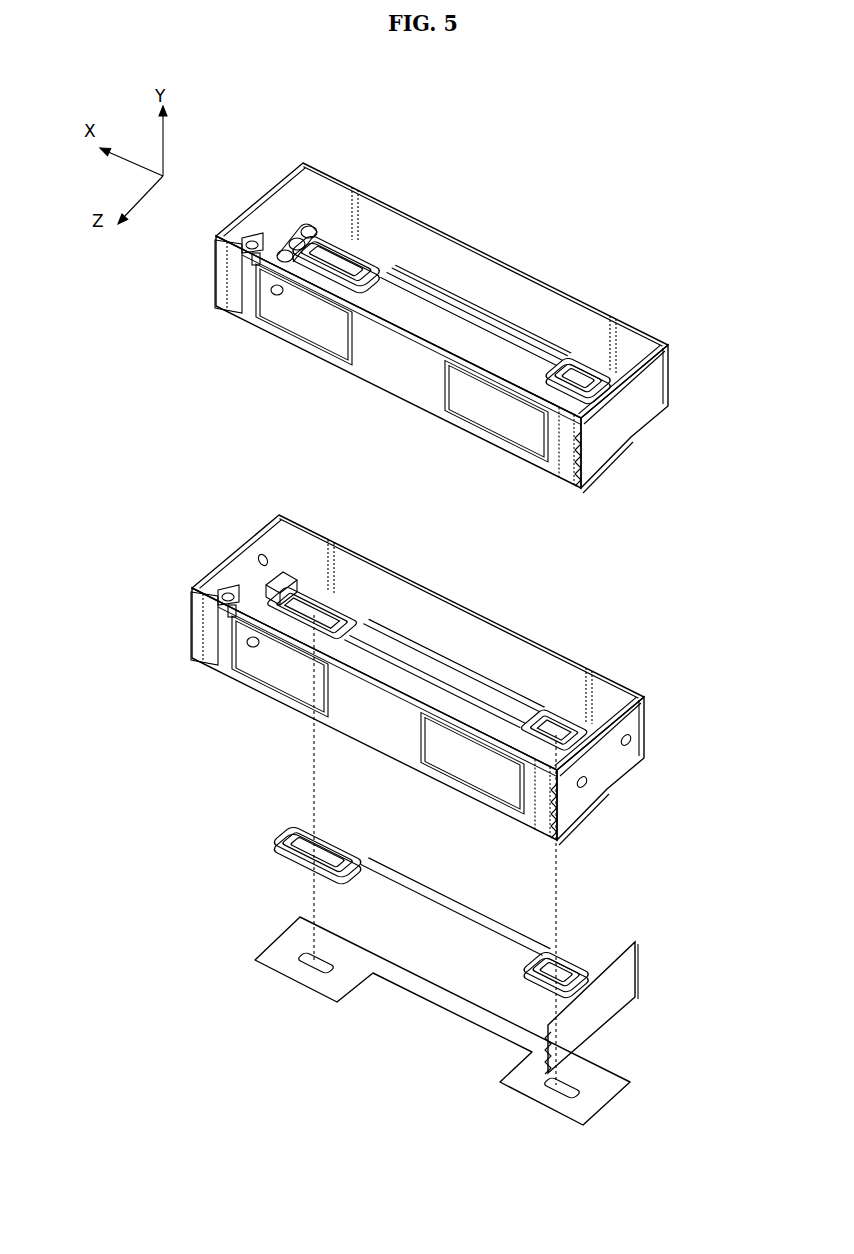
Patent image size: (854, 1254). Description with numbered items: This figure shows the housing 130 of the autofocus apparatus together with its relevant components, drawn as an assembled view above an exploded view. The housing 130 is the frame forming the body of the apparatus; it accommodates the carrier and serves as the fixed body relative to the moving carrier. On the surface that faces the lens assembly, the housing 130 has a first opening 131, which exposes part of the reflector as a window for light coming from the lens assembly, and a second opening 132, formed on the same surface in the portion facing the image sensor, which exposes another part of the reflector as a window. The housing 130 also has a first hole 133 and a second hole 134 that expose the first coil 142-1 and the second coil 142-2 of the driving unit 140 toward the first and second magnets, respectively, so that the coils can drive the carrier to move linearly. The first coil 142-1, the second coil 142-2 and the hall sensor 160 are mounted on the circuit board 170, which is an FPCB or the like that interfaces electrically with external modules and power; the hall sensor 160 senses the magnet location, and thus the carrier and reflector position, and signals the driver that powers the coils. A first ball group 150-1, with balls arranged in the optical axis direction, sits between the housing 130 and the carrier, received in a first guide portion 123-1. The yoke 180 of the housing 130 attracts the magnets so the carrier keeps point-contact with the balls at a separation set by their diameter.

The housing 130 is at (510, 285).
The first opening 131 is at (326, 328).
The second opening 132 is at (503, 415).
The first hole 133 is at (332, 627).
The second hole 134 is at (573, 733).
The driving unit 140 is at (452, 578).
The first coil 142-1 is at (360, 262).
The second coil 142-2 is at (600, 382).
The first ball group 150-1 is at (312, 228).
The hall sensor 160 is at (585, 388).
The circuit board 170 is at (618, 992).
The yoke 180 is at (337, 988).
The first guide portion 123-1 is at (270, 588).